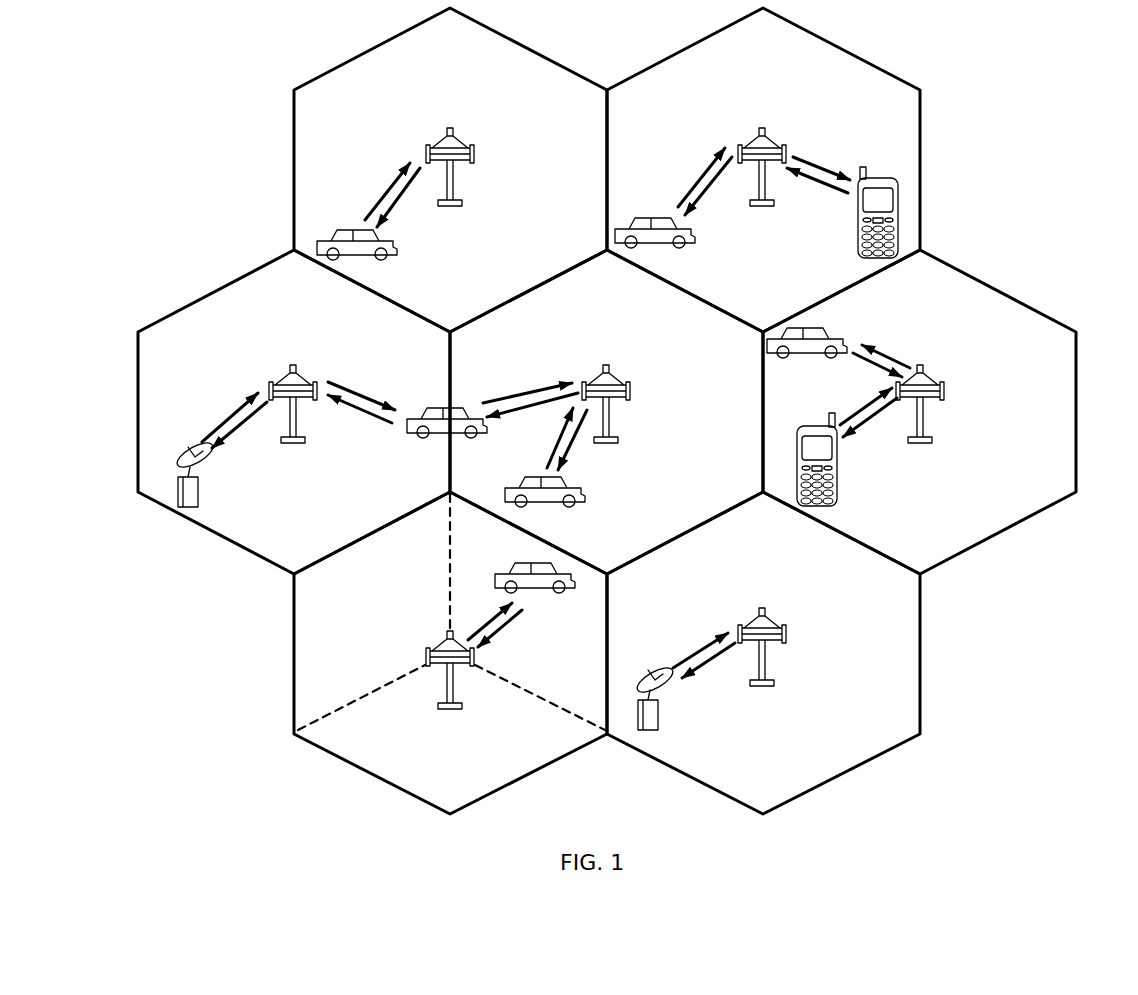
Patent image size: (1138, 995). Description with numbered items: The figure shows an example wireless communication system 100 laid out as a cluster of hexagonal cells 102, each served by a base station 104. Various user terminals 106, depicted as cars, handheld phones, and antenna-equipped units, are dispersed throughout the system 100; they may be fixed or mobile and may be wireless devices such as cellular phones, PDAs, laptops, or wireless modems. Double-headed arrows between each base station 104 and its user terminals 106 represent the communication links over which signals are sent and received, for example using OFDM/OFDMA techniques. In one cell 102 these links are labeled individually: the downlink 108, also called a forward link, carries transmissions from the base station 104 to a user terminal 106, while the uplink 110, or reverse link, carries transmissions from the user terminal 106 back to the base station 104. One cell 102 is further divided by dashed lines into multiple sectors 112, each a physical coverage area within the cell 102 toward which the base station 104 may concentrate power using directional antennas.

The wireless communication system 100 is at (1099, 61).
The cell 102 is at (380, 44).
The base station 104 is at (452, 128).
The user terminal 106 is at (396, 251).
The downlink 108 is at (393, 205).
The uplink 110 is at (386, 190).
The sector 112 is at (507, 770).